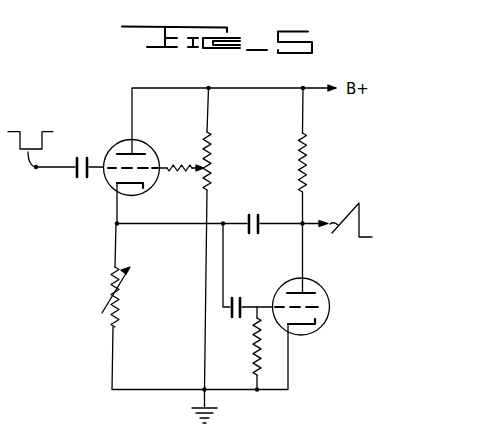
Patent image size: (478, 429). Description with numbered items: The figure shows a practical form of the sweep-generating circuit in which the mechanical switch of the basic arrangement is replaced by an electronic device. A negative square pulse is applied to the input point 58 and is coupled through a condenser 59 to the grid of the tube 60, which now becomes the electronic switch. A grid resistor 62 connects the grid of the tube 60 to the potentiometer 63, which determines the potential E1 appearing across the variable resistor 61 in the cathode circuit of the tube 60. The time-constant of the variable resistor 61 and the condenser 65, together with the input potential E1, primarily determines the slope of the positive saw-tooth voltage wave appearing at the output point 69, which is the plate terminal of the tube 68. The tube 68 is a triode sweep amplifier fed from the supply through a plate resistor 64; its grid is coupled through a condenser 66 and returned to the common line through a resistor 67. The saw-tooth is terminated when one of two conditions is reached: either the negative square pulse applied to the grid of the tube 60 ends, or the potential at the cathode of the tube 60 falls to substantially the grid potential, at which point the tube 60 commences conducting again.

The point 58 is at (38, 167).
The coupling capacitor 59 is at (94, 177).
The tube 60 is at (119, 142).
The variable resistor 61 is at (107, 294).
The grid resistor 62 is at (192, 165).
The potentiometer 63 is at (216, 173).
The plate load resistor 64 is at (313, 178).
The condenser 65 is at (242, 211).
The grid capacitor 66 is at (247, 317).
The grid leak resistor 67 is at (251, 343).
The tube 68 is at (333, 308).
The point 69 is at (310, 224).